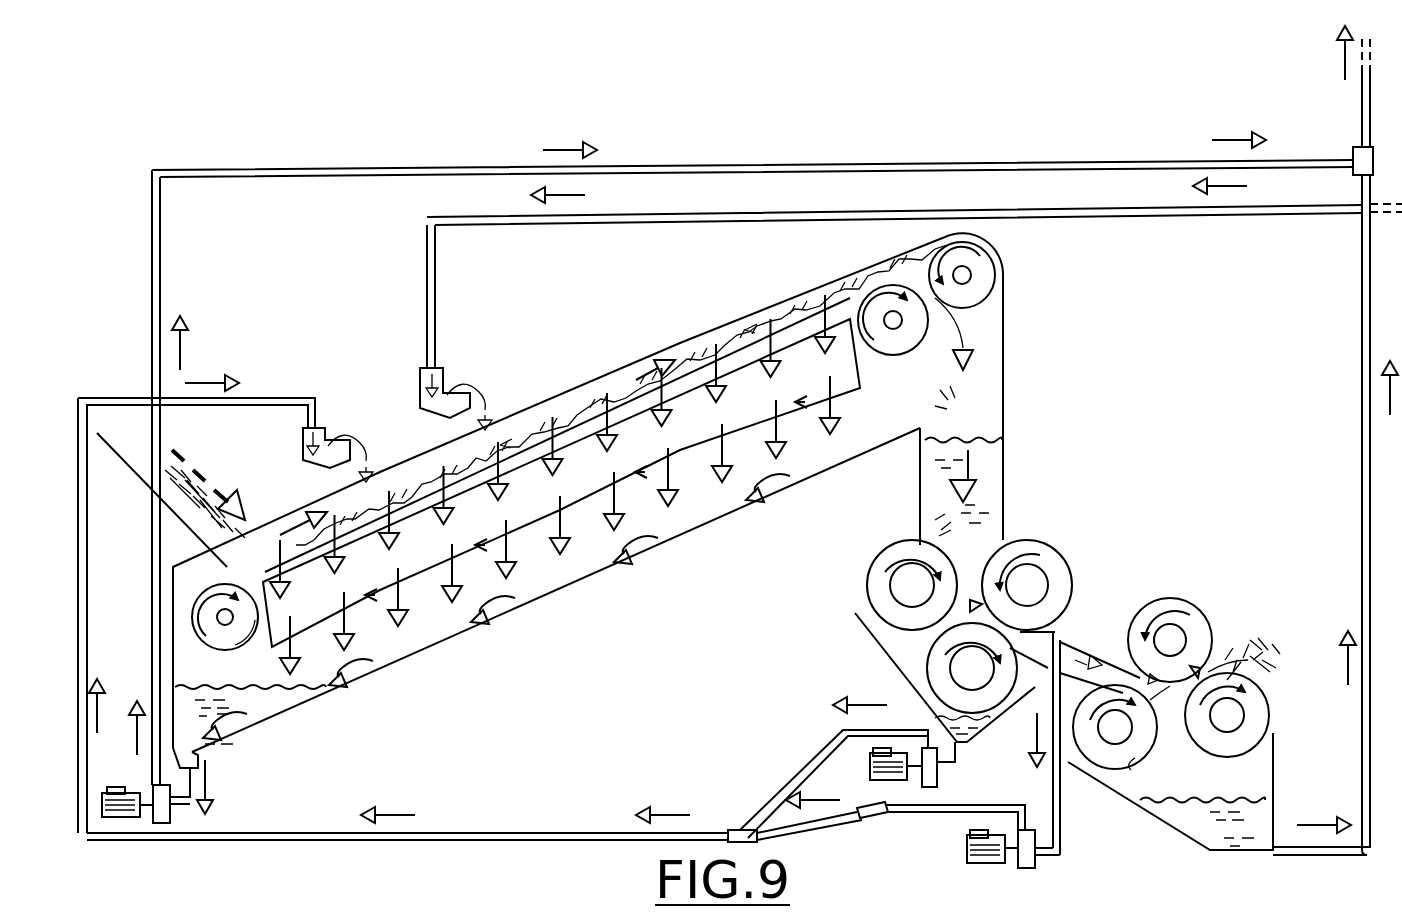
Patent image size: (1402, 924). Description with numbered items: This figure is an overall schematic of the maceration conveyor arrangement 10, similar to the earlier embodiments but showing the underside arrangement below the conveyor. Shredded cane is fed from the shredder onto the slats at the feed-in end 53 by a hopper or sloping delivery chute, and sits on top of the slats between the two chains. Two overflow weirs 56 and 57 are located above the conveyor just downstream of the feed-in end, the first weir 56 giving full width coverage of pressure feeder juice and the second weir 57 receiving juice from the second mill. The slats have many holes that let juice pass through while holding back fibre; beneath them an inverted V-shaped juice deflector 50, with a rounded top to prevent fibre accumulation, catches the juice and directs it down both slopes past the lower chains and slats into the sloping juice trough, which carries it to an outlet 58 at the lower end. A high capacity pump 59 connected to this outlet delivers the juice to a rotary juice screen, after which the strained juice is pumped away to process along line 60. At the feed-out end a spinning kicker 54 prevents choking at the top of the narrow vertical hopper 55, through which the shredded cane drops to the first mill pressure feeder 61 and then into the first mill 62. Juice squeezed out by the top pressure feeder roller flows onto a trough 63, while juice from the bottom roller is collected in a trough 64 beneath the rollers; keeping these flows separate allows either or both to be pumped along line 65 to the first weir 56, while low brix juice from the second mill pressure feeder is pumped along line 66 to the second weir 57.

The washing apparatus 10 is at (386, 452).
The juice deflector 50 is at (805, 385).
The feed-in end 53 is at (214, 482).
The spinning kicker 54 is at (1012, 258).
The vertical hopper 55 is at (990, 376).
The first overflow weir 56 is at (325, 440).
The second overflow weir 57 is at (462, 372).
The outlet 58 is at (200, 763).
The high capacity pump 59 is at (170, 813).
The line 60 is at (676, 167).
The No. 1 mill pressure feeder 61 is at (1028, 533).
The No. 1 mill 62 is at (1153, 580).
The trough 63 is at (1084, 613).
The trough 64 is at (985, 720).
The line 65 is at (577, 830).
The line 66 is at (1116, 214).